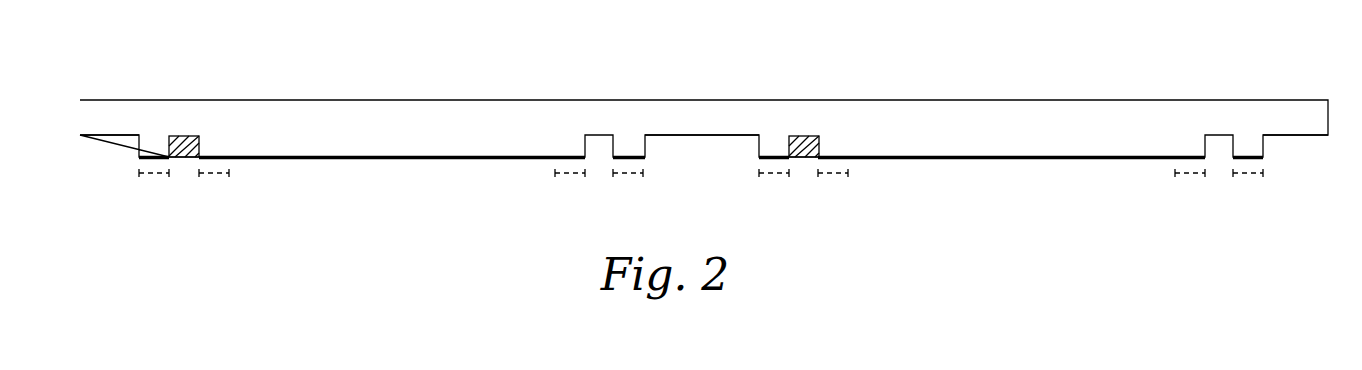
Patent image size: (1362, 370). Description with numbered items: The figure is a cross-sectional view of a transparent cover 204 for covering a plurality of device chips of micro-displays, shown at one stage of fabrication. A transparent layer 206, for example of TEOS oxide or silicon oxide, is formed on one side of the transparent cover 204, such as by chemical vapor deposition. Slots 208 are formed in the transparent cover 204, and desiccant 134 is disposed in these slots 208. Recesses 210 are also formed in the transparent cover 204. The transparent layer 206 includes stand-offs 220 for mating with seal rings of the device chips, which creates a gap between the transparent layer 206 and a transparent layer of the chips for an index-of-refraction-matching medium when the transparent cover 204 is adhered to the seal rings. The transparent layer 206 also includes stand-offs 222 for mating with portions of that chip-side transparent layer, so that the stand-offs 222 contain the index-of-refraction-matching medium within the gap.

The desiccant 134 is at (187, 136).
The transparent cover 204 is at (955, 139).
The transparent layer 206 is at (446, 158).
The slots 208 is at (179, 165).
The recesses 210 is at (110, 135).
The stand-offs 220 is at (153, 172).
The stand-offs 222 is at (215, 172).